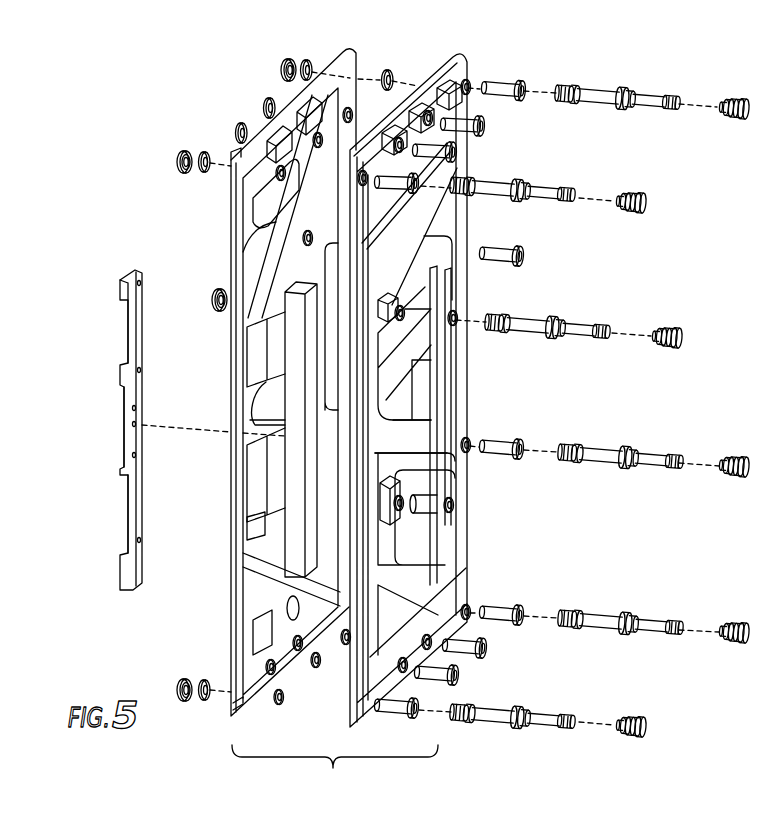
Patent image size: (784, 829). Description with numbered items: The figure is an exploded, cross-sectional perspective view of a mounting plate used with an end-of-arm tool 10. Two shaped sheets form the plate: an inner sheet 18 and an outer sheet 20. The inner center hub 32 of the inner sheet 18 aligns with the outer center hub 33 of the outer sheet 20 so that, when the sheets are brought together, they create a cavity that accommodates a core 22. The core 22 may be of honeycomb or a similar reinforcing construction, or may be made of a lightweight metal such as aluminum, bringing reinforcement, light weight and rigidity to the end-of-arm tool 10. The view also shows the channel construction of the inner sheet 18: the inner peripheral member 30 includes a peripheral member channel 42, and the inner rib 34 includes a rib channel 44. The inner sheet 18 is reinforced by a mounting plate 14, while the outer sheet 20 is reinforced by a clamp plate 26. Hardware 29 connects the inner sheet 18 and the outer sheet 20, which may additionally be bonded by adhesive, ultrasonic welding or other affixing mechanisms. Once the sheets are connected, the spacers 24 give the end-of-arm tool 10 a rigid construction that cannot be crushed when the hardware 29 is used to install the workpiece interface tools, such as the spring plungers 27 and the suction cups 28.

The end-of-arm tool 10 is at (335, 774).
The mounting plate 14 is at (120, 395).
The inner sheet 18 is at (321, 56).
The outer sheet 20 is at (428, 68).
The core 22 is at (295, 352).
The spacer 24 is at (503, 87).
The clamp plate 26 is at (445, 363).
The spring plunger 27 is at (632, 93).
The suction cup 28 is at (733, 103).
The hardware 29 is at (185, 147).
The inner peripheral member 30 is at (247, 170).
The inner center hub 32 is at (237, 452).
The outer center hub 33 is at (370, 422).
The inner rib 34 is at (297, 227).
The peripheral member channel 42 is at (253, 692).
The rib channel 44 is at (272, 562).